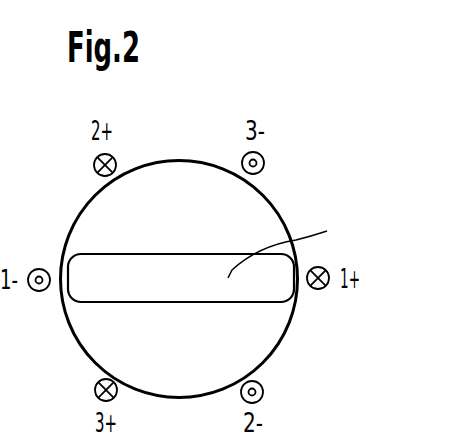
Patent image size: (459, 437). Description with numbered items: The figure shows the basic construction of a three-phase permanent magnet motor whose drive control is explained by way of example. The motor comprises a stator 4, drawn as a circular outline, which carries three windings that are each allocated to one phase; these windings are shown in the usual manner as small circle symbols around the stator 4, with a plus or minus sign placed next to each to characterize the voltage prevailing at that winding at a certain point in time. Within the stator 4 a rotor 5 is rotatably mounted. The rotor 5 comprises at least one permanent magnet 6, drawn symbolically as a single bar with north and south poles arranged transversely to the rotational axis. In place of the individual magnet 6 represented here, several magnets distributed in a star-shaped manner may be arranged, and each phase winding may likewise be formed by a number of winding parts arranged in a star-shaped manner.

The stator 4 is at (276, 204).
The rotor 5 is at (265, 303).
The permanent magnet 6 is at (284, 247).